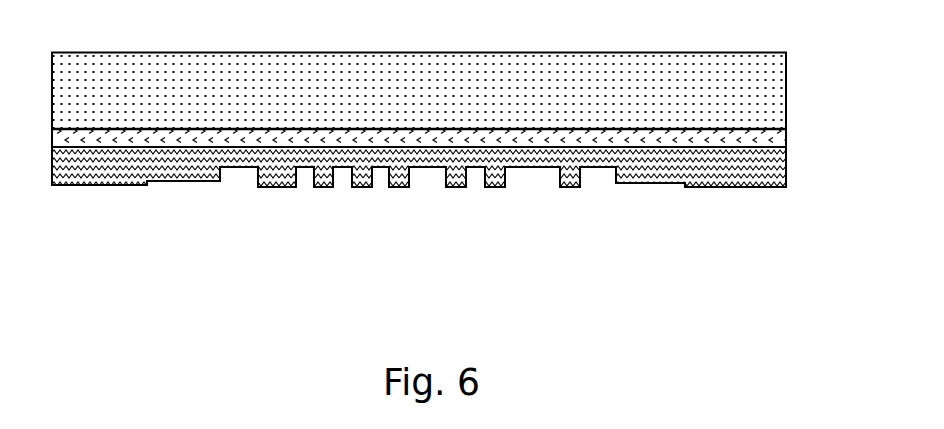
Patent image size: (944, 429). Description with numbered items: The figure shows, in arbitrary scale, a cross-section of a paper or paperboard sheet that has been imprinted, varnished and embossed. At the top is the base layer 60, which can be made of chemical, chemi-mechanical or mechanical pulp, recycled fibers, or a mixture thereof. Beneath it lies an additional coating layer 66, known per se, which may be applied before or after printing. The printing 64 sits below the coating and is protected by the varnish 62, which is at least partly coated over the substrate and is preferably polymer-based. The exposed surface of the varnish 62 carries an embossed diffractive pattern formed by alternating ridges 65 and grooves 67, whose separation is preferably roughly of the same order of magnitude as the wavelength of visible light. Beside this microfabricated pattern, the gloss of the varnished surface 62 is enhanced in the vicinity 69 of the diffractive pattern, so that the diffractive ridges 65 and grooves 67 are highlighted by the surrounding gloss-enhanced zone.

The base layer 60 is at (770, 92).
The additional coating layer 66 is at (770, 142).
The printing 64 is at (767, 153).
The varnish 62 is at (763, 177).
The ridges 65 is at (490, 180).
The grooves 67 is at (518, 178).
The vicinity of the diffractive pattern 69 is at (672, 187).